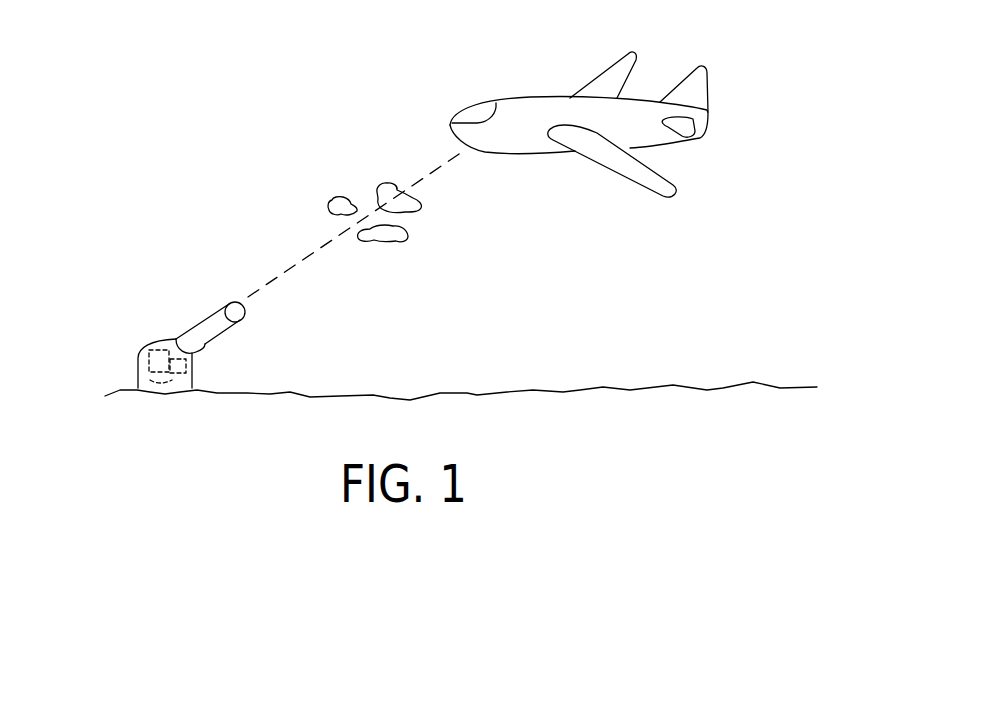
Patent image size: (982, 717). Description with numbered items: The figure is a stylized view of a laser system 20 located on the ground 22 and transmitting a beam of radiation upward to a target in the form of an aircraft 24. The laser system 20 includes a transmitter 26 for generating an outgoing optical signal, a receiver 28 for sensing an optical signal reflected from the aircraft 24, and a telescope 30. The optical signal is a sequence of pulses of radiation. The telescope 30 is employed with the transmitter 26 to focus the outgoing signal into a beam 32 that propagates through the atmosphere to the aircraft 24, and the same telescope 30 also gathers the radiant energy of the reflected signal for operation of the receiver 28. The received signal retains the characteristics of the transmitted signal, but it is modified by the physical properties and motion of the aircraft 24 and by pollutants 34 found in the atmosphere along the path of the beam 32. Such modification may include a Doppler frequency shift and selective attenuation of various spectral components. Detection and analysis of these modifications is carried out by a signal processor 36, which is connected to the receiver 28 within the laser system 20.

The laser system 20 is at (165, 330).
The ground 22 is at (392, 398).
The aircraft 24 is at (529, 97).
The transmitter 26 is at (186, 366).
The receiver 28 is at (145, 358).
The telescope 30 is at (211, 310).
The beam 32 is at (325, 249).
The pollutants 34 is at (380, 183).
The signal processor 36 is at (157, 376).